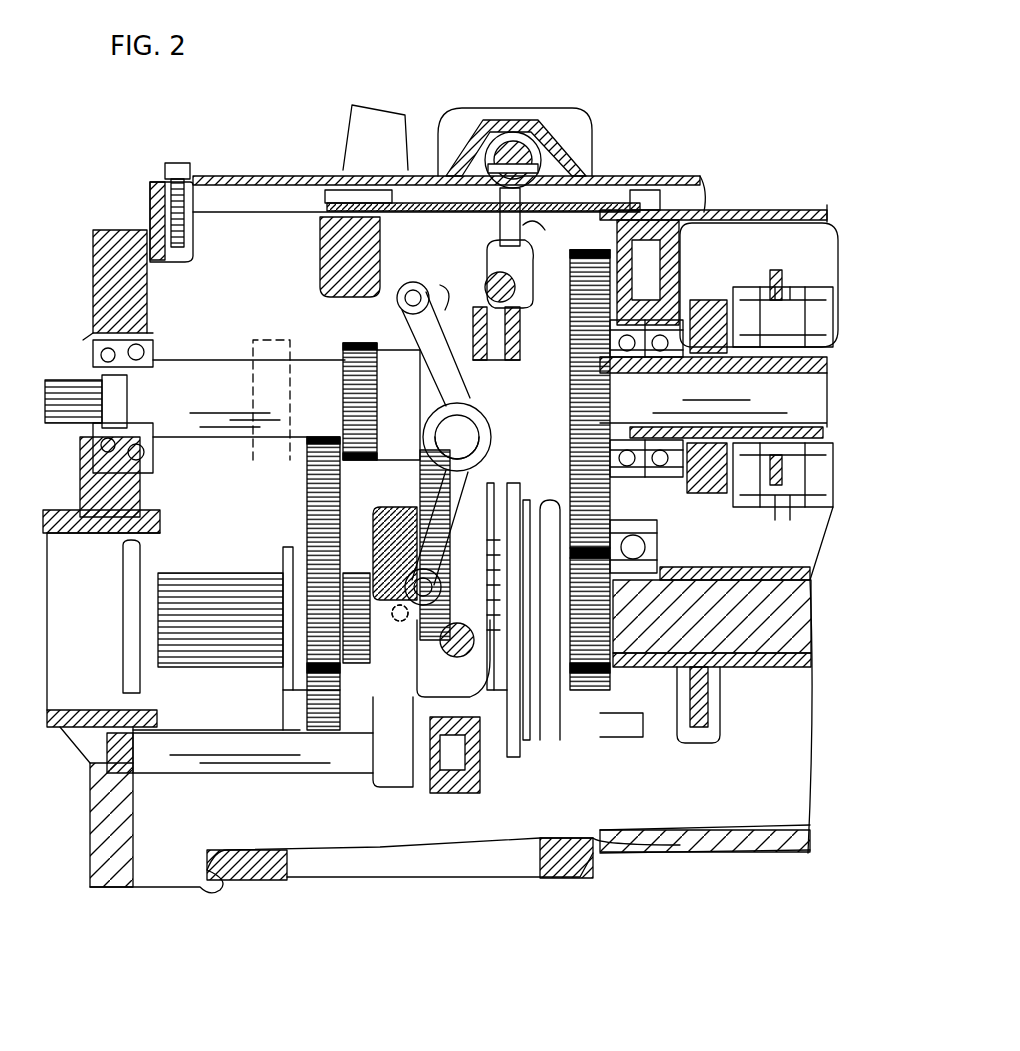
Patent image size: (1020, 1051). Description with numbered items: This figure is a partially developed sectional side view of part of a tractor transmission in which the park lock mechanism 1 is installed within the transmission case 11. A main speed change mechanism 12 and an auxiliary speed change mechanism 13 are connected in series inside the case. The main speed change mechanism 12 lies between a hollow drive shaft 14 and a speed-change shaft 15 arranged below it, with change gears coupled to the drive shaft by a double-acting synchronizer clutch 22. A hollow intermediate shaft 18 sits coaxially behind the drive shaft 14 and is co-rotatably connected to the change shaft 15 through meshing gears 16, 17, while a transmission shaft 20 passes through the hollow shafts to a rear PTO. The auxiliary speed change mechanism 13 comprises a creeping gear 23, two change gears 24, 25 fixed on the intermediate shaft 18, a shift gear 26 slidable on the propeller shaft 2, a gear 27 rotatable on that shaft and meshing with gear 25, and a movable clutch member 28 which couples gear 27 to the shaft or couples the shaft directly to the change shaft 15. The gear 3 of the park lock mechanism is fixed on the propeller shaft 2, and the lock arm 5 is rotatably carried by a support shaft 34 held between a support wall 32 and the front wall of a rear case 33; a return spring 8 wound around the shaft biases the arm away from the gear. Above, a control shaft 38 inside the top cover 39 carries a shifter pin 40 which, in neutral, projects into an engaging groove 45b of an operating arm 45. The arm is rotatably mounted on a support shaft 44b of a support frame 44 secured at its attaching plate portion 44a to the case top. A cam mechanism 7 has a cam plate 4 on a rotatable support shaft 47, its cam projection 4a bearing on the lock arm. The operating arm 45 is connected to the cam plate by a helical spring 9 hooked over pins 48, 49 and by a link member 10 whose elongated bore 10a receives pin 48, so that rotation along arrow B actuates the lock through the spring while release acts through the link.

The park lock mechanism 1 is at (362, 692).
The propeller shaft 2 is at (215, 622).
The gear 3 is at (307, 517).
The cam plate 4 is at (302, 697).
The cam projection 4a is at (285, 562).
The lock arm 5 is at (395, 665).
The cam mechanism 7 is at (470, 592).
The return spring 8 is at (395, 780).
The helical spring 9 is at (470, 403).
The link member 10 is at (435, 392).
The elongated bore 10a is at (455, 315).
The transmission case 11 is at (735, 210).
The main speed change mechanism 12 is at (785, 252).
The auxiliary speed change mechanism 13 is at (268, 690).
The hollow drive shaft 14 is at (700, 330).
The speed-change shaft 15 is at (763, 640).
The meshing gear 16 is at (580, 690).
The meshing gear 17 is at (613, 210).
The hollow intermediate shaft 18 is at (225, 383).
The transmission shaft 20 is at (65, 380).
The double-acting synchronizer clutch 22 is at (793, 505).
The creeping gear 23 is at (265, 343).
The change gear 24 is at (350, 343).
The change gear 25 is at (570, 365).
The shift gear 26 is at (320, 487).
The gear 27 is at (415, 495).
The movable clutch member 28 is at (500, 750).
The support wall 32 is at (478, 793).
The rear case 33 is at (110, 845).
The support shaft 34 is at (297, 755).
The control shaft 38 is at (513, 132).
The top cover 39 is at (294, 176).
The shifter pin 40 is at (540, 187).
The support frame 44 is at (405, 222).
The attaching plate portion 44a is at (415, 203).
The support shaft 44b is at (520, 290).
The operating arm 45 is at (505, 245).
The engaging groove 45b is at (535, 227).
The support shaft 47 is at (475, 640).
The pin 48 is at (381, 401).
The pin 49 is at (419, 622).
The arrow B is at (412, 290).